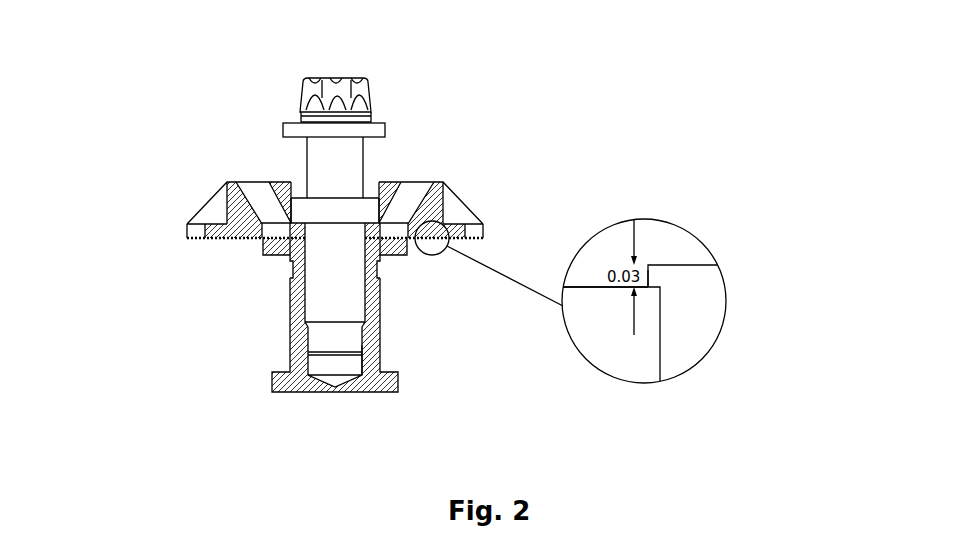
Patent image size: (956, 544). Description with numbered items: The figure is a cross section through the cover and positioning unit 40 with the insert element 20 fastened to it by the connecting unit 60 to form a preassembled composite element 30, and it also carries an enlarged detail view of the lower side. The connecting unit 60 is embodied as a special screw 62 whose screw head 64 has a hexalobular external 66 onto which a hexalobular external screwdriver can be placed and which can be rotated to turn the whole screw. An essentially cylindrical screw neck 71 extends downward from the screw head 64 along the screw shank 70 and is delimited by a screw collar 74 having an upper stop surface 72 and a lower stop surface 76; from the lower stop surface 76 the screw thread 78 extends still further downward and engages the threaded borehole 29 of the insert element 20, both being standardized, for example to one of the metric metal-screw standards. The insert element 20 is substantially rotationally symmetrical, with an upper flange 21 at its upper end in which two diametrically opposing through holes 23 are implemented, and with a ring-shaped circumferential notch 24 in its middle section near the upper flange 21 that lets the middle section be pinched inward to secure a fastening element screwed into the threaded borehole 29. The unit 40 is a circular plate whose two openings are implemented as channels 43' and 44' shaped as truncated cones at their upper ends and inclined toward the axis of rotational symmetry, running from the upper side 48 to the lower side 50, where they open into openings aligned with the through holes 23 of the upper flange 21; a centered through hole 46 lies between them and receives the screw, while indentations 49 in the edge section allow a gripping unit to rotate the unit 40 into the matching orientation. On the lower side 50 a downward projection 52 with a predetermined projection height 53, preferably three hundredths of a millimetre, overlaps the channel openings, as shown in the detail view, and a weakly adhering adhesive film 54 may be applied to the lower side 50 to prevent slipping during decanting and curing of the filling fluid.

The insert element 20 is at (214, 326).
The upper flange 21 is at (260, 243).
The through holes 23 is at (282, 244).
The ring-shaped circumferential notch 24 is at (382, 275).
The threaded borehole 29 is at (365, 343).
The fastener assembly 30 is at (487, 61).
The cover and positioning unit 40 is at (155, 184).
The channel 43' is at (440, 195).
The channel 44' is at (235, 192).
The through hole 46 is at (307, 188).
The upper side 48 is at (285, 178).
The indentations 49 is at (200, 233).
The lower side 50 is at (231, 247).
The projection 52 is at (622, 290).
The projection height 53 is at (655, 275).
The adhesive film 54 is at (188, 250).
The connecting unit 60 is at (208, 107).
The special screw 62 is at (390, 155).
The screw head 64 is at (370, 110).
The hexalobular external 66 is at (375, 87).
The bolt shank 70 is at (384, 160).
The screw neck 71 is at (352, 180).
The upper stop surface 72 is at (378, 198).
The screw collar 74 is at (353, 221).
The lower stop surface 76 is at (360, 230).
The screw thread 78 is at (312, 306).